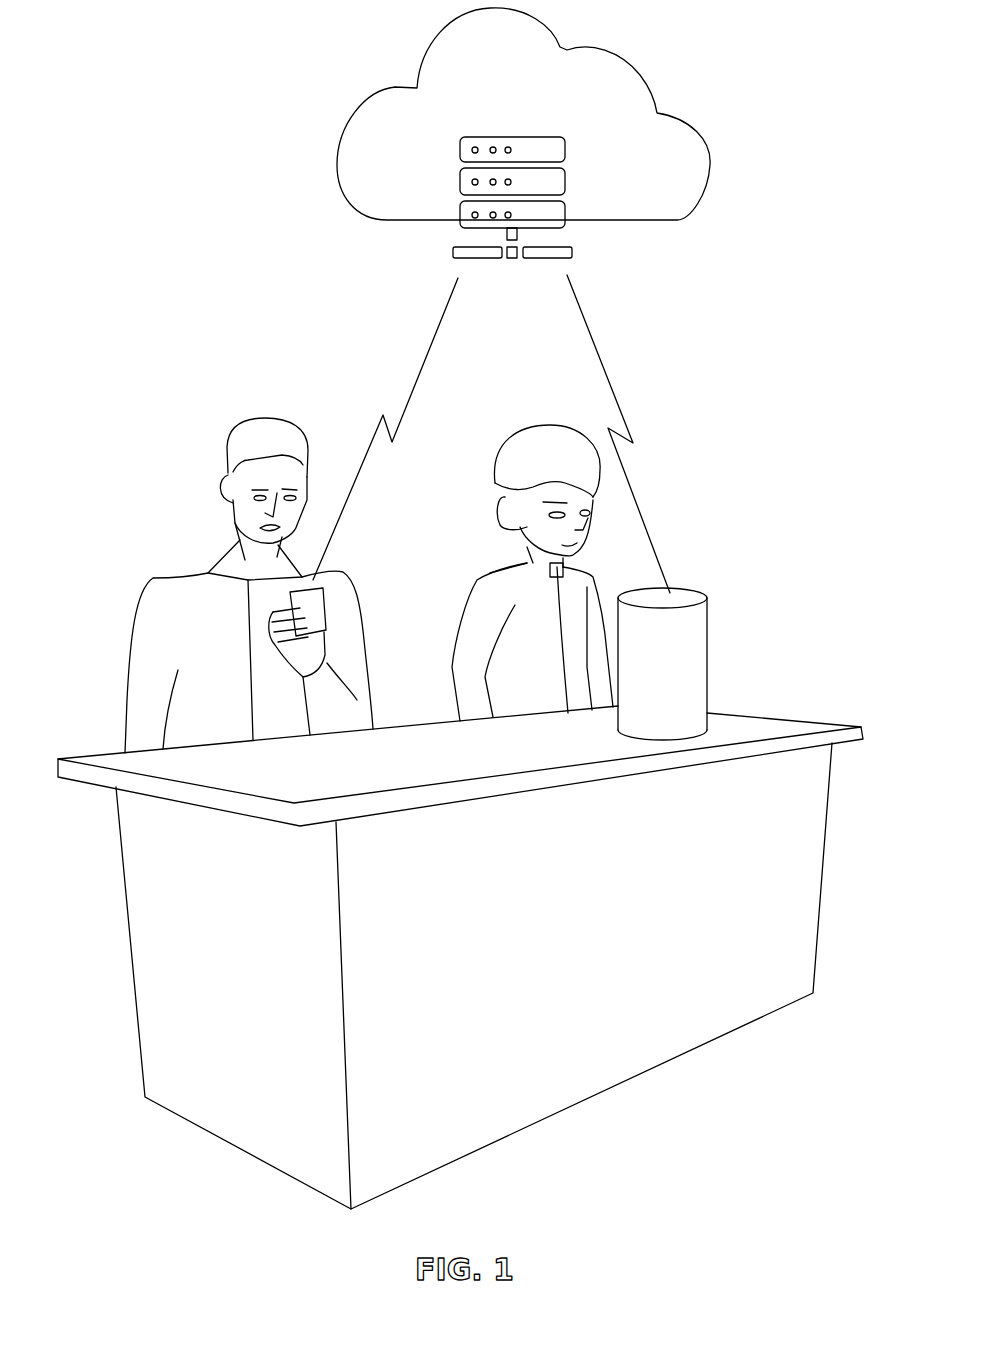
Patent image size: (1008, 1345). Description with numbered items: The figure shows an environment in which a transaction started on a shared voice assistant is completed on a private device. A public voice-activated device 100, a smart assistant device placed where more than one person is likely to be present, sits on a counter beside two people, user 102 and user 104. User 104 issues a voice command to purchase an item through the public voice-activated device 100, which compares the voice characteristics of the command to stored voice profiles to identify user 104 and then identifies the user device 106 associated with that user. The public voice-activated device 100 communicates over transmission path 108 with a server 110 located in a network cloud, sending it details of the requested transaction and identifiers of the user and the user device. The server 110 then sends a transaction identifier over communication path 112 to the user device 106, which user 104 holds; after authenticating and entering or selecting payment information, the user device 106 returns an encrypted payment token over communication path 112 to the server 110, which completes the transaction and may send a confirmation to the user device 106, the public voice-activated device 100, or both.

The public voice-activated device 100 is at (683, 715).
The user 102 is at (497, 577).
The user 104 is at (180, 577).
The user device 106 is at (327, 583).
The transmission path 108 is at (605, 355).
The server 110 is at (515, 136).
The communication path 112 is at (427, 342).